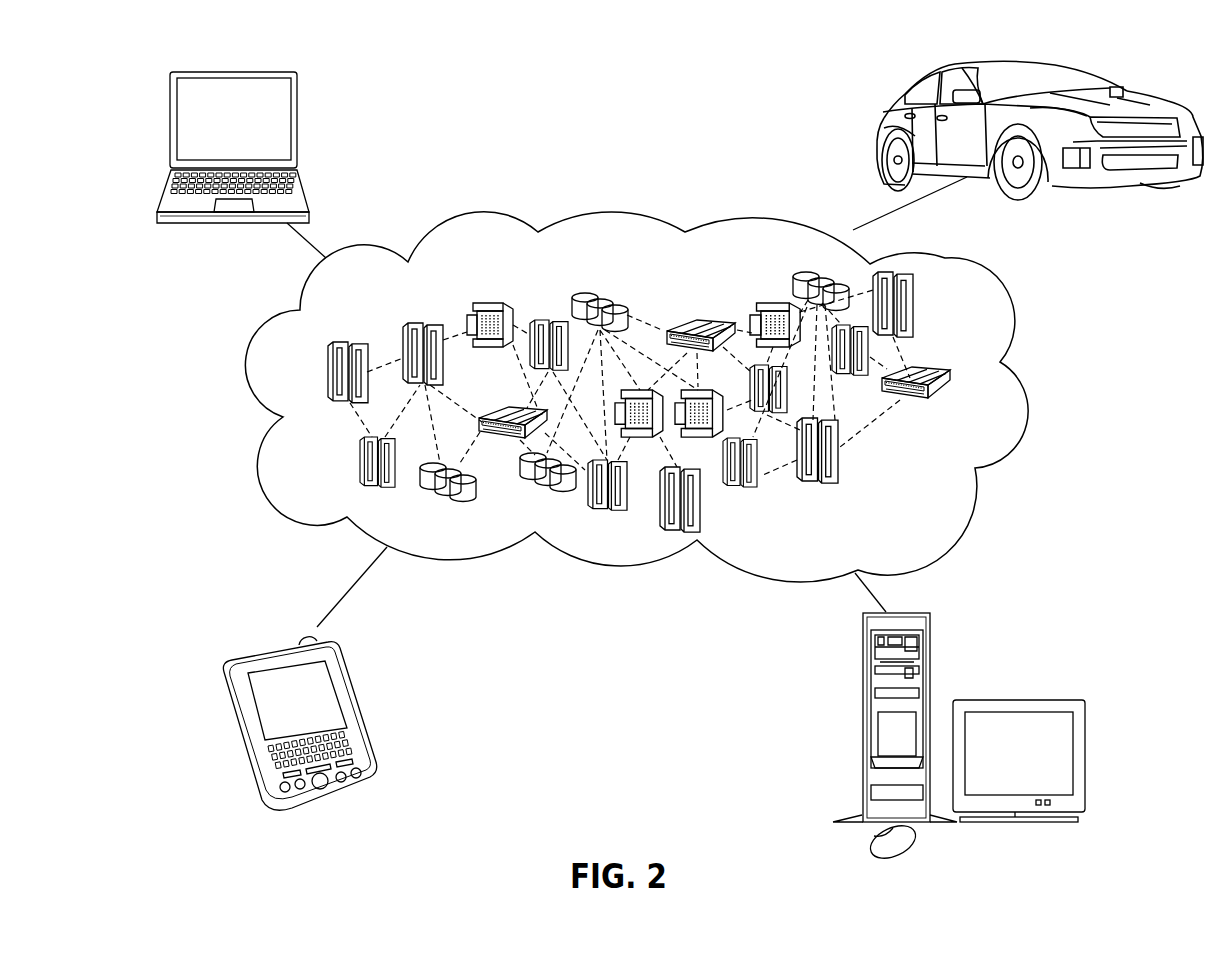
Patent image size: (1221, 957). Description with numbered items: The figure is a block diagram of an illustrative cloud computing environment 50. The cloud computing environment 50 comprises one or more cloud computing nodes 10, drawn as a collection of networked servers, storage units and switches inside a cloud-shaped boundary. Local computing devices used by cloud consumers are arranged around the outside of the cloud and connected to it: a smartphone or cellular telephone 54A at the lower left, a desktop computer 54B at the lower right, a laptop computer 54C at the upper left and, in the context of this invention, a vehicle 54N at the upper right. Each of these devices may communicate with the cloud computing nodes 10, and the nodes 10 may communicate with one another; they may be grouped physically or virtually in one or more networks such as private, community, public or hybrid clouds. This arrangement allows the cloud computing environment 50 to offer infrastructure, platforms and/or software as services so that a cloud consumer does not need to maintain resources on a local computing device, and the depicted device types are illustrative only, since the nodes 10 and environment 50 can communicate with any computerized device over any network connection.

The cloud computing nodes 10 is at (931, 474).
The cloud computing environment 50 is at (1018, 383).
The smartphone or cellular telephone 54A is at (348, 680).
The desktop computer 54B is at (862, 668).
The laptop computer 54C is at (298, 105).
The vehicle 54N is at (878, 124).